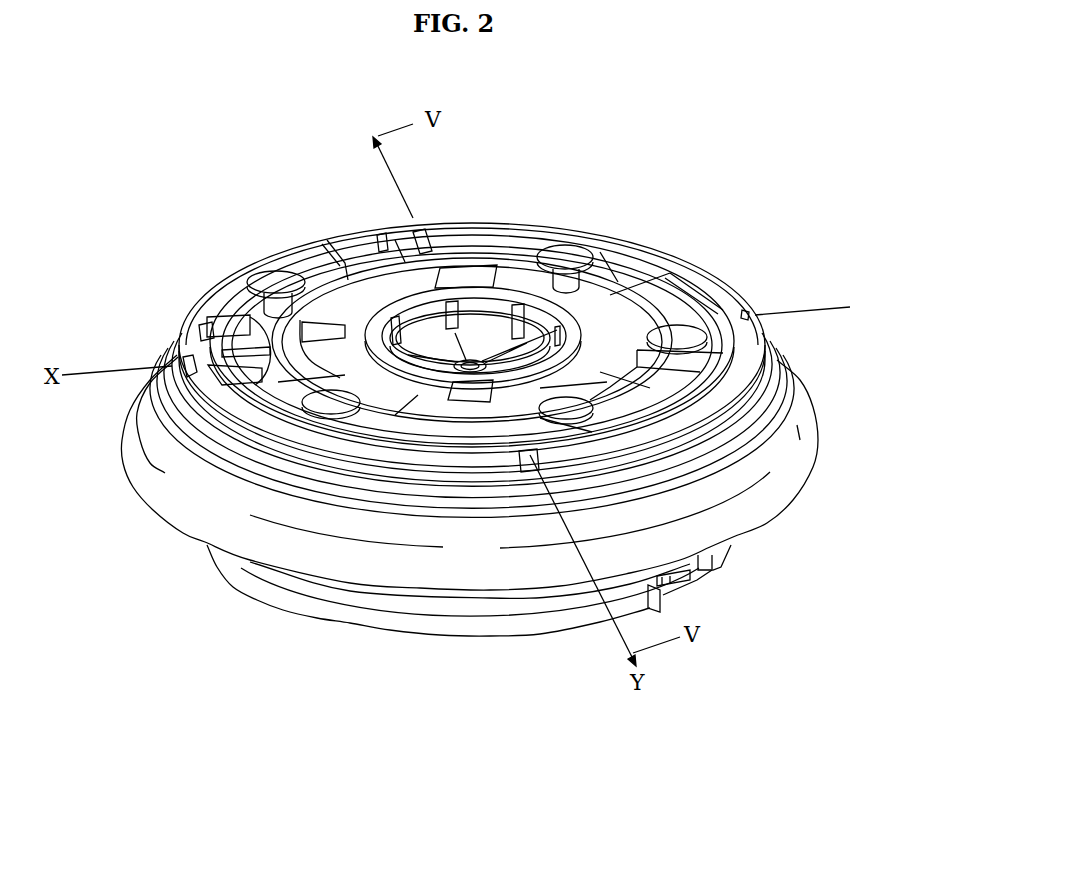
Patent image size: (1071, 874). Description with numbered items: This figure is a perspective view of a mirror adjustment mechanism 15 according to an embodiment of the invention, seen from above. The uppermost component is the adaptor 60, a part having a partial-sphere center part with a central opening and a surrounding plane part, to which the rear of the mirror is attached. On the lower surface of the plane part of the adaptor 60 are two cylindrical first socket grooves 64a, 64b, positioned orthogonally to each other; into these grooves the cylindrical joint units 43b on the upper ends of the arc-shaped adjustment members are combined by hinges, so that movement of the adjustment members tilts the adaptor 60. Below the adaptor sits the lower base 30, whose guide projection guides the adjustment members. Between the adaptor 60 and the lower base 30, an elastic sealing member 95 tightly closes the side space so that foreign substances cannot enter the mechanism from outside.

The mirror adjustment mechanism 15 is at (678, 128).
The lower base 30 is at (370, 622).
The cylindrical joint unit 43b is at (385, 232).
The adaptor 60 is at (698, 270).
The first socket groove 64a is at (252, 328).
The first socket groove 64b is at (415, 231).
The sealing member 95 is at (173, 507).